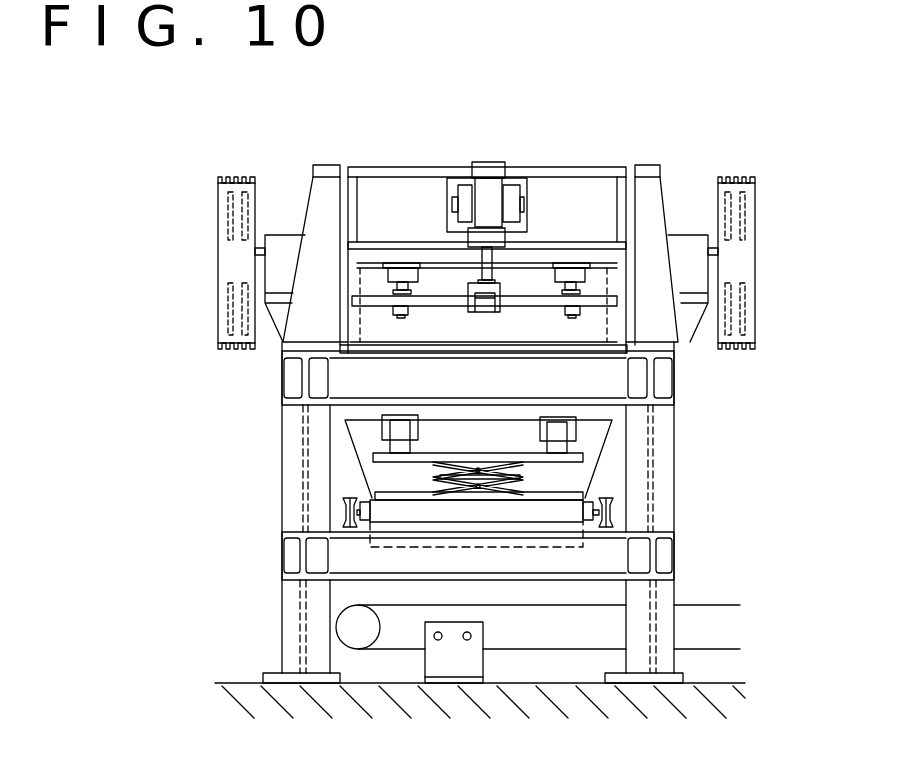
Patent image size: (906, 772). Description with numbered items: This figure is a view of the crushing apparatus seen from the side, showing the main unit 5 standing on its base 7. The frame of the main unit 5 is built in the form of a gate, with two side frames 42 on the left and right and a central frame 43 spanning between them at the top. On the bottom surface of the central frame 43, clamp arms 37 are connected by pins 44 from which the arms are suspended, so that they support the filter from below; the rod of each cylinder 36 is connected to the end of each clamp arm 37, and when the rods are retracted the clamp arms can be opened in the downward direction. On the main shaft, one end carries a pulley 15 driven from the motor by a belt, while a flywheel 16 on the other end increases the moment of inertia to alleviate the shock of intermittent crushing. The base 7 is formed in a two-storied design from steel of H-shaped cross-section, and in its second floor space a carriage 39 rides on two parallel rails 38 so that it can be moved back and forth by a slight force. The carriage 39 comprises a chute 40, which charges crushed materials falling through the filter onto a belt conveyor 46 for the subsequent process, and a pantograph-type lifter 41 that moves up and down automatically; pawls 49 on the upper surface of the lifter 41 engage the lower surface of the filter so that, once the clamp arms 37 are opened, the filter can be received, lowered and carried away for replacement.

The main unit 5 is at (403, 166).
The base 7 is at (280, 562).
The pulley 15 is at (218, 214).
The flywheel 16 is at (755, 216).
The cylinder 36 is at (490, 162).
The clamp arm 37 is at (390, 350).
The rail 38 is at (343, 527).
The carriage 39 is at (522, 520).
The chute 40 is at (607, 443).
The lifter 41 is at (500, 487).
The side frame 42 is at (310, 208).
The central frame 43 is at (567, 190).
The pin 44 is at (387, 282).
The drive unit 46 is at (533, 652).
The pawl 49 is at (390, 433).